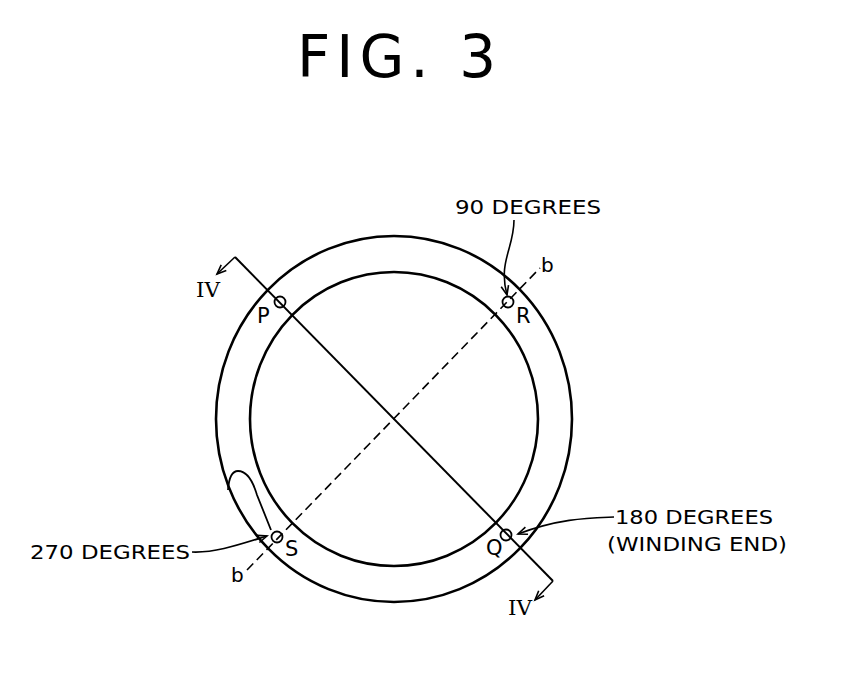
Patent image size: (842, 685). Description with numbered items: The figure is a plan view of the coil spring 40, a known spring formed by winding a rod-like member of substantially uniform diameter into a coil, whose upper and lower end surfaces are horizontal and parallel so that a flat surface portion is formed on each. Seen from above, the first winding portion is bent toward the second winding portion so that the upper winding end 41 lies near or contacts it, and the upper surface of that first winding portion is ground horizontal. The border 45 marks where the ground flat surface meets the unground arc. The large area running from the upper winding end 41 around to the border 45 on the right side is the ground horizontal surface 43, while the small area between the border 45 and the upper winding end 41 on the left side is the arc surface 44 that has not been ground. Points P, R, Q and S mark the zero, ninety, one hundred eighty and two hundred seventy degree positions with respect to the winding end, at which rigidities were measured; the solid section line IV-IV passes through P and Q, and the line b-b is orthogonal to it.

The coil spring 40 is at (407, 445).
The upper winding end 41 is at (268, 285).
The horizontal surface 43 is at (560, 328).
The arc surface 44 is at (232, 373).
The border 45 is at (233, 477).